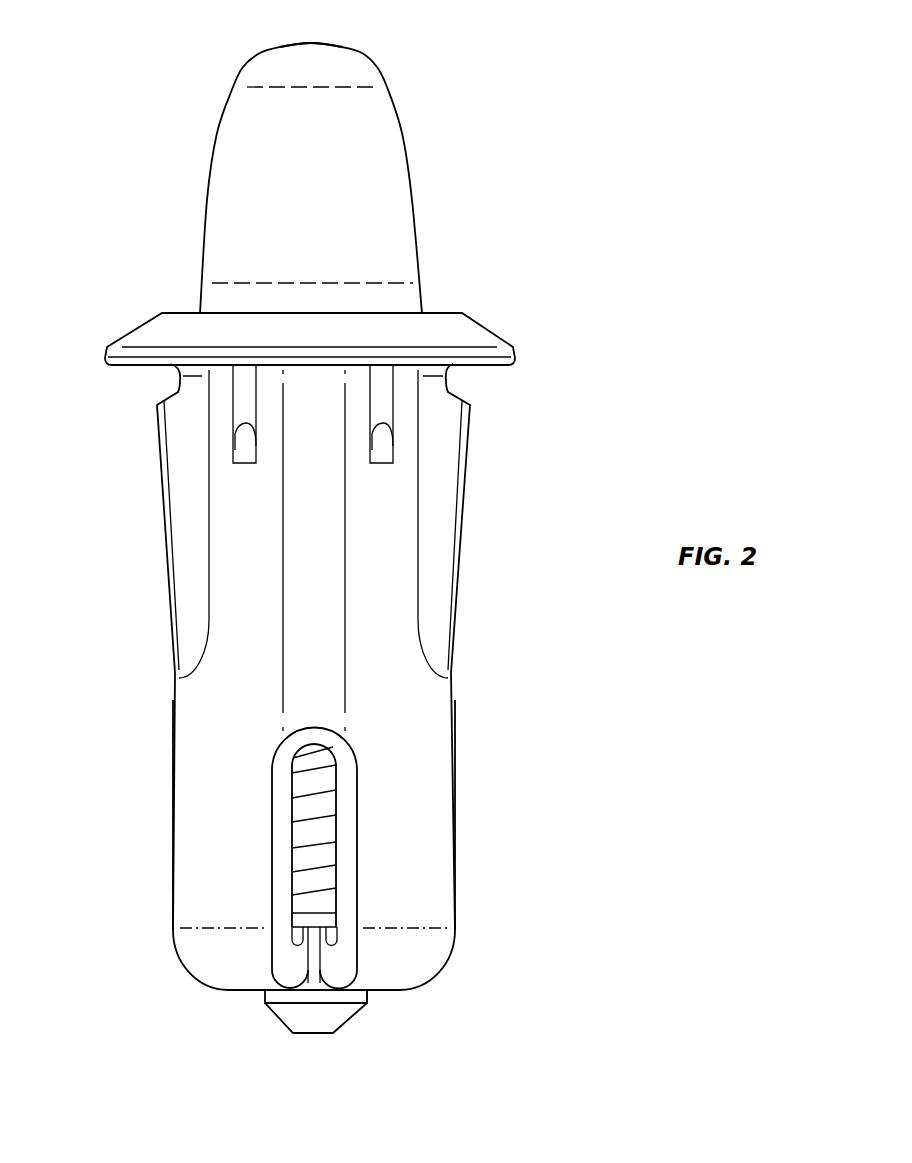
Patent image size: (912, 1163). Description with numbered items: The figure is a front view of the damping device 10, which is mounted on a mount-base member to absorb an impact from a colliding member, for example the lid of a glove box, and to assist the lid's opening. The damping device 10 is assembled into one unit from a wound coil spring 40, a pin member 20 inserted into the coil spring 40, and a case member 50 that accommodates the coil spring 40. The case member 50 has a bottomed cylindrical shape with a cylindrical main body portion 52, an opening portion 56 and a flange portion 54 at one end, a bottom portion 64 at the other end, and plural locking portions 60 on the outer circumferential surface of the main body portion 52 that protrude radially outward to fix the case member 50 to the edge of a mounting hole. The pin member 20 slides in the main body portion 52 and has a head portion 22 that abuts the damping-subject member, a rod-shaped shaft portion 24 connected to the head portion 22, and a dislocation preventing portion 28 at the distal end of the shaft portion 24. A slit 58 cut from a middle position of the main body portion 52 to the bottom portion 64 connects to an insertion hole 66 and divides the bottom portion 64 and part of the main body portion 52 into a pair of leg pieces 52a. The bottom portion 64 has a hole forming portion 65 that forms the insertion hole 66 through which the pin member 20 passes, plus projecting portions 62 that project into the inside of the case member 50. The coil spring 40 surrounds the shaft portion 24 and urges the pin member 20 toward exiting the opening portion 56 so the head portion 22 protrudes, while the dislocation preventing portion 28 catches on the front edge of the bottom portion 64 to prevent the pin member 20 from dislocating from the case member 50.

The damping device 10 is at (333, 1074).
The pin member 20 is at (252, 173).
The head portion 22 is at (323, 47).
The shaft portion 24 is at (313, 953).
The dislocation preventing portion 28 is at (333, 1020).
The coil spring 40 is at (309, 793).
The case member 50 is at (233, 625).
The main body portion 52 is at (382, 568).
The leg pieces 52a is at (443, 873).
The flange portion 54 is at (515, 348).
The opening portion 56 is at (343, 312).
The slit 58 is at (348, 778).
The locking portions 60 is at (470, 407).
The projecting portions 62 is at (343, 933).
The bottom portion 64 is at (405, 990).
The hole forming portion 65 is at (365, 992).
The insertion hole 66 is at (314, 975).